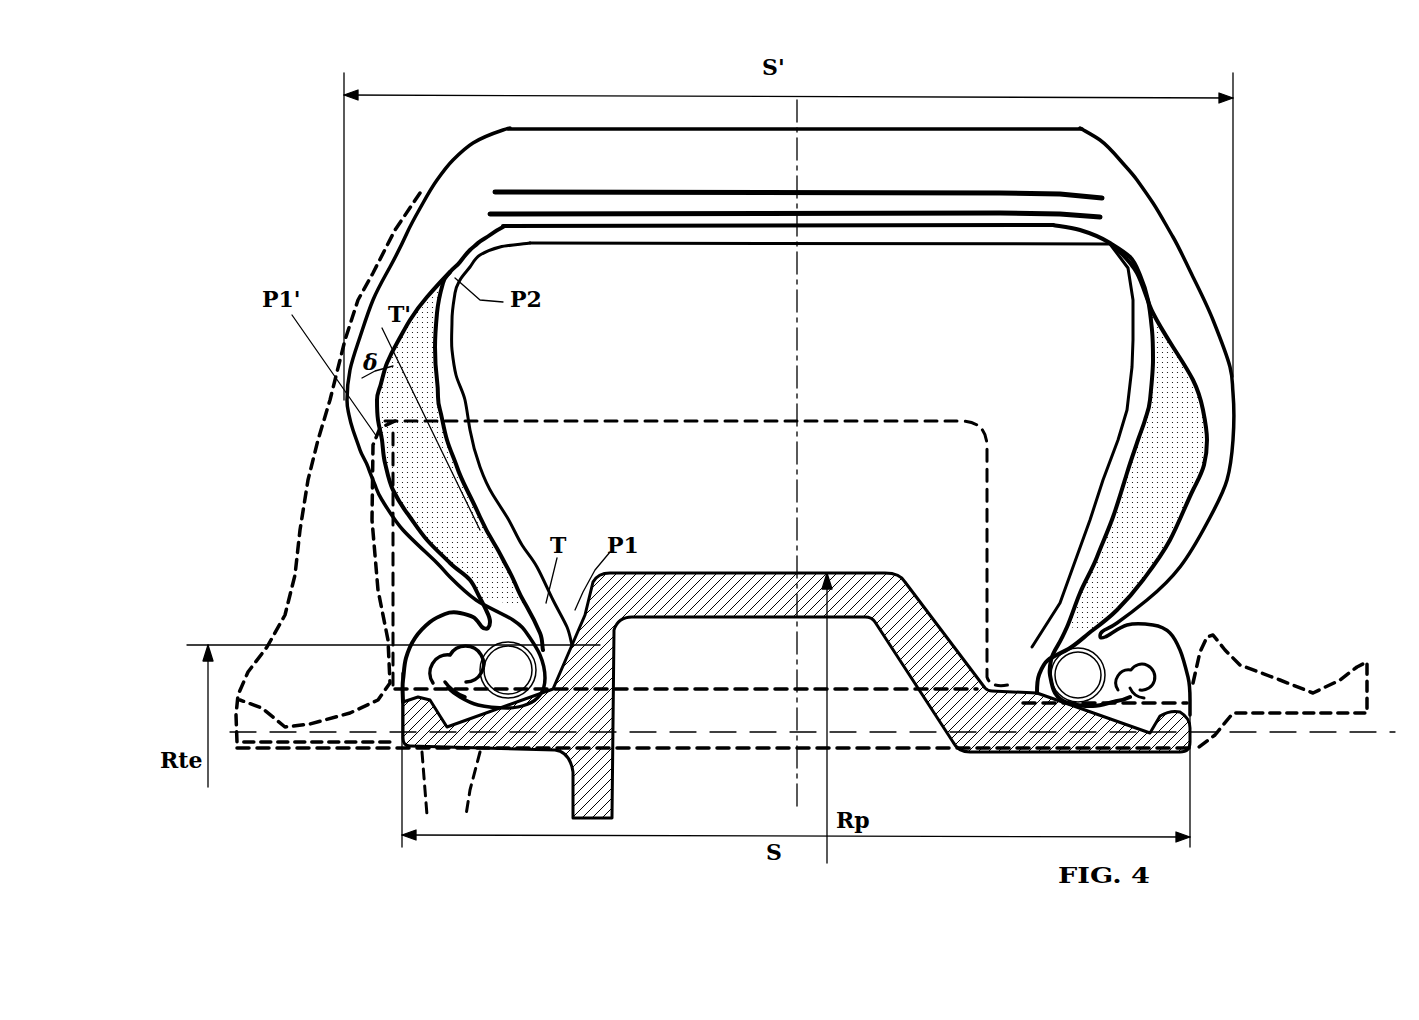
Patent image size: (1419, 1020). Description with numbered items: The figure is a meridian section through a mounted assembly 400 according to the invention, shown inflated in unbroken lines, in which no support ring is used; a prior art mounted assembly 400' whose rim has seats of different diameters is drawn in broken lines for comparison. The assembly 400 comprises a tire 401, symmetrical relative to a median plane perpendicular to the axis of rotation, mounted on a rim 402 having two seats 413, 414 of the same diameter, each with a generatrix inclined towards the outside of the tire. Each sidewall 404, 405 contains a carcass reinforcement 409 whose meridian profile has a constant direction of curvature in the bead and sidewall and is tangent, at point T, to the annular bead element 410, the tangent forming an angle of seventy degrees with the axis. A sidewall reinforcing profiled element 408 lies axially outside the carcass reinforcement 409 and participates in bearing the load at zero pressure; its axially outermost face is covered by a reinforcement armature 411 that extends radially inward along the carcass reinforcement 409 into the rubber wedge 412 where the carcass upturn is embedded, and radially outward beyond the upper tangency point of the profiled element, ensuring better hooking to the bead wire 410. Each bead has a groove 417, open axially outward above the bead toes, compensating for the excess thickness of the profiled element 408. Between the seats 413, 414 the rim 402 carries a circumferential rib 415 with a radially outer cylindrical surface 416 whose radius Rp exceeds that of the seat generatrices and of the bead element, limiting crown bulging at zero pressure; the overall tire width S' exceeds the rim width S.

The mounted assembly 400 is at (1313, 145).
The prior art mounted assembly 400' is at (771, 471).
The tire 401 is at (868, 421).
The rim 402 is at (796, 695).
The sidewall 404 is at (792, 445).
The sidewall 405 is at (1301, 475).
The sidewall reinforcing profiled element 408 is at (886, 438).
The carcass reinforcement 409 is at (704, 445).
The annular bead element 410 is at (792, 672).
The reinforcement armature 411 is at (789, 474).
The rubber wedge 412 is at (741, 743).
The rim seat 413 is at (512, 809).
The rim seat 414 is at (1211, 763).
The circumferential rib 415 is at (912, 695).
The cylindrical surface 416 is at (842, 525).
The groove 417 is at (347, 557).